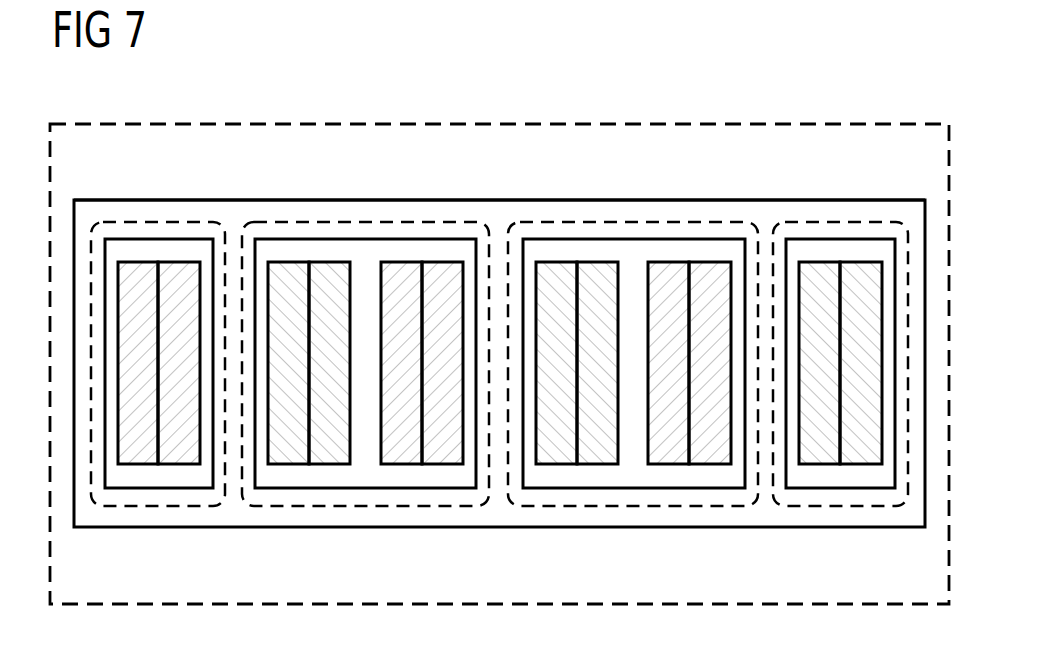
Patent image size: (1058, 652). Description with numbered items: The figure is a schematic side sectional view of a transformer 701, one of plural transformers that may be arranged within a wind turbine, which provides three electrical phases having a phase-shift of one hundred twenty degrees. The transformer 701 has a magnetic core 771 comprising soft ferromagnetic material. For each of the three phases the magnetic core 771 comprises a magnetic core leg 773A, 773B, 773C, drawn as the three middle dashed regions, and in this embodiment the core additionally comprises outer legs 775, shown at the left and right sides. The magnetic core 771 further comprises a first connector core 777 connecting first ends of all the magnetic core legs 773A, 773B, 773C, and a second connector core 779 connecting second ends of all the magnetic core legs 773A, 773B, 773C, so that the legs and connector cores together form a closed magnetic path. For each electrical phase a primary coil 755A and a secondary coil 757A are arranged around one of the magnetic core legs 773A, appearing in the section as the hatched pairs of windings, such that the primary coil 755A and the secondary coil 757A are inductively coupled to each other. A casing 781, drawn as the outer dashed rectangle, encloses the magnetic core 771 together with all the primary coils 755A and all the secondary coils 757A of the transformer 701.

The transformer 701 is at (754, 84).
The casing 781 is at (513, 124).
The outer legs 775 is at (72, 247).
The magnetic core 771 is at (892, 200).
The first connector core 777 is at (499, 208).
The magnetic core leg 773A is at (223, 257).
The magnetic core leg 773B is at (487, 450).
The second connector core 779 is at (610, 506).
The magnetic core leg 773C is at (770, 450).
The primary coil 755A is at (288, 270).
The secondary coil 757A is at (330, 270).